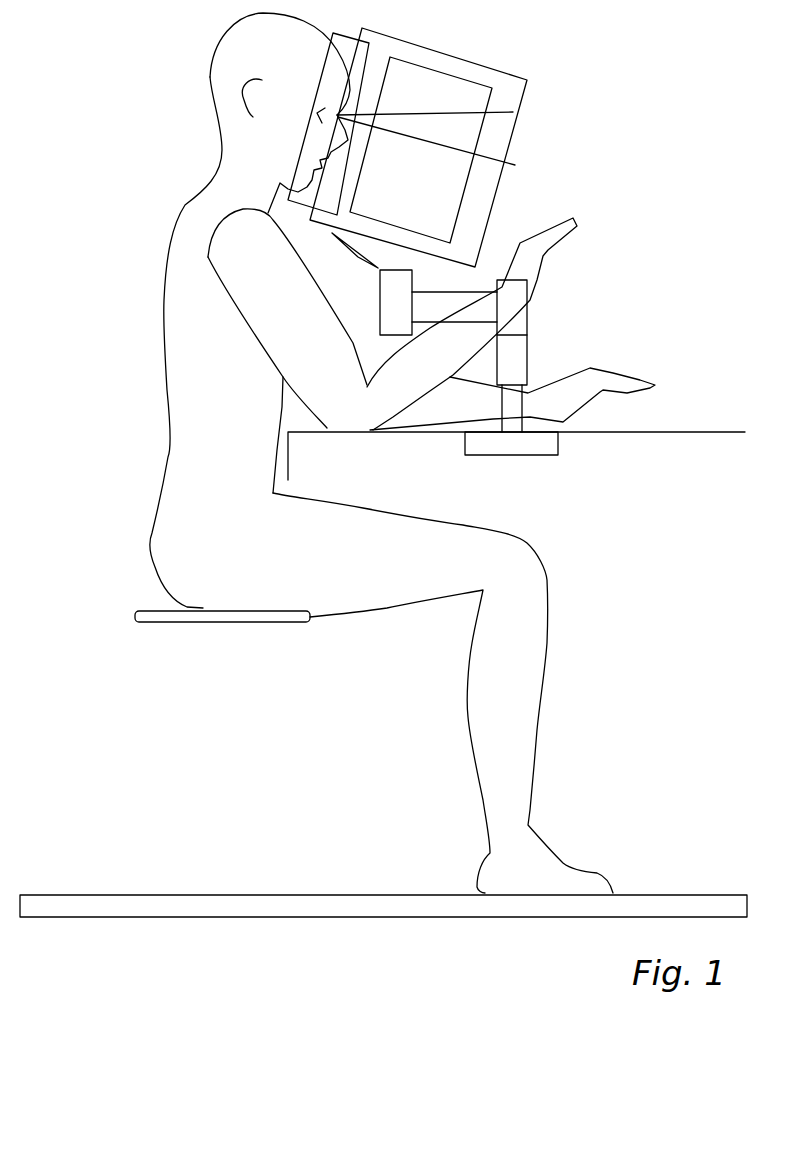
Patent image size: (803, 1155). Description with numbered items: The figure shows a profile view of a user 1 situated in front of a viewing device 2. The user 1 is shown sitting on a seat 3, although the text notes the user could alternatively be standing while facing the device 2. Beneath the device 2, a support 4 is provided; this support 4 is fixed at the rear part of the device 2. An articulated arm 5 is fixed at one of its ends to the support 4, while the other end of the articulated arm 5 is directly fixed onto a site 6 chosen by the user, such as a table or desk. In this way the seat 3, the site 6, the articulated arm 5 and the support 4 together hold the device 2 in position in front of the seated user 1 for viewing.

The user 1 is at (162, 345).
The device 2 is at (515, 130).
The seat 3 is at (135, 613).
The support 4 is at (407, 282).
The articulated arm 5 is at (457, 306).
The site 6 is at (688, 432).